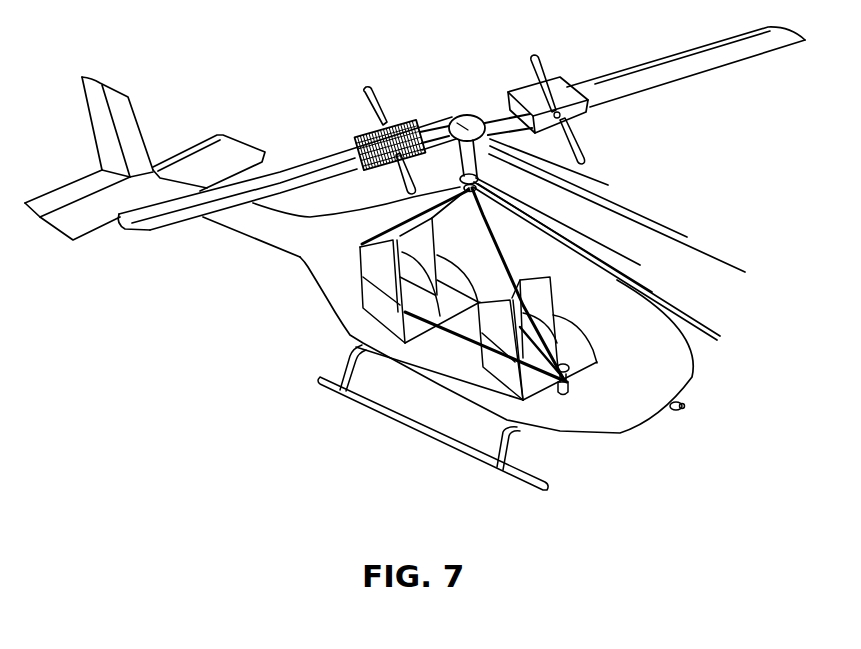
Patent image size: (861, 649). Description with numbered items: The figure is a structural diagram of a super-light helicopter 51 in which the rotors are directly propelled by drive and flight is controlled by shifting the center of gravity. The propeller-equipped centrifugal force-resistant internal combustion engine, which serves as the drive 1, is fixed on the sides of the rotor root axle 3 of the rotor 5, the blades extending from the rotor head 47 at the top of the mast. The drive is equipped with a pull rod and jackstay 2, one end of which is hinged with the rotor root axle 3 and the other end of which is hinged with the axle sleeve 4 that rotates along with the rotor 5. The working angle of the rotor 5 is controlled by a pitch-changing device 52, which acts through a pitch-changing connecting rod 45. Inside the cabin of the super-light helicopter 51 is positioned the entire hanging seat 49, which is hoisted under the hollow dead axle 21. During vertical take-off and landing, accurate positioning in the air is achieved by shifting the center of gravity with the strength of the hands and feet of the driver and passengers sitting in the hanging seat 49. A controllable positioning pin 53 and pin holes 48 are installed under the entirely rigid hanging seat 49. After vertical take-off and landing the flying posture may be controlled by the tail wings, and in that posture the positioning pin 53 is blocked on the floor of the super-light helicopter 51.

The drive 1 is at (510, 90).
The pull rod and jackstay 2 is at (608, 185).
The rotor root axle 3 is at (773, 272).
The axle sleeve 4 is at (670, 265).
The rotor 5 is at (727, 67).
The hollow dead axle 21 is at (687, 292).
The pitch-changing connecting rod 45 is at (733, 237).
The rotor head 47 is at (457, 122).
The pin hole 48 is at (562, 402).
The hanging seat 49 is at (390, 315).
The super-light helicopter 51 is at (535, 407).
The pitch-changing device 52 is at (750, 340).
The positioning pin 53 is at (568, 378).